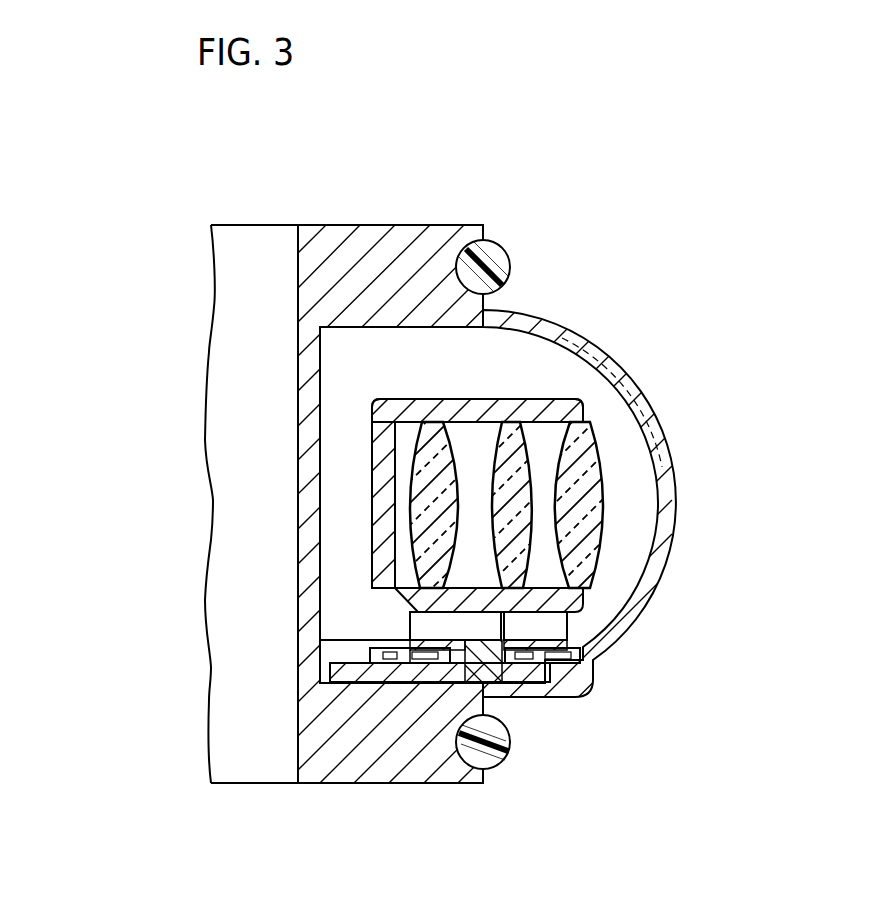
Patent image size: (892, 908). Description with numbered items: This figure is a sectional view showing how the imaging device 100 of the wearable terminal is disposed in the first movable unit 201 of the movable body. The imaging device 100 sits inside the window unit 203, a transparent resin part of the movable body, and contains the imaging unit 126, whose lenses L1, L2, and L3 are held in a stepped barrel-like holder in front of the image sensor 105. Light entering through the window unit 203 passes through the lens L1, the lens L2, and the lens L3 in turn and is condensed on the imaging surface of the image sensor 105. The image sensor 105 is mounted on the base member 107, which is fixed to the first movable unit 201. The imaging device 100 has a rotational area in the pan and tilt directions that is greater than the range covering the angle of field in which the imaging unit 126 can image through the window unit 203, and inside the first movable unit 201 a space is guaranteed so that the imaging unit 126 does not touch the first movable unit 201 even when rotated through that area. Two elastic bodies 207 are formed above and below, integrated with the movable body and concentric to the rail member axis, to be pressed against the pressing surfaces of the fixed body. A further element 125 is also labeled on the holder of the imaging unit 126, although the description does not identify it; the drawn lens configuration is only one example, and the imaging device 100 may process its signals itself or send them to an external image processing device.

The imaging device 100 is at (323, 394).
The image sensor 105 is at (385, 433).
The base member 107 is at (330, 665).
The holder top portion 125 is at (433, 405).
The imaging unit 126 is at (492, 378).
The first movable unit 201 is at (405, 784).
The window unit 203 is at (635, 610).
The elastic bodies 207 is at (504, 247).
The lens L1 is at (580, 452).
The lens L2 is at (507, 491).
The lens L3 is at (433, 528).